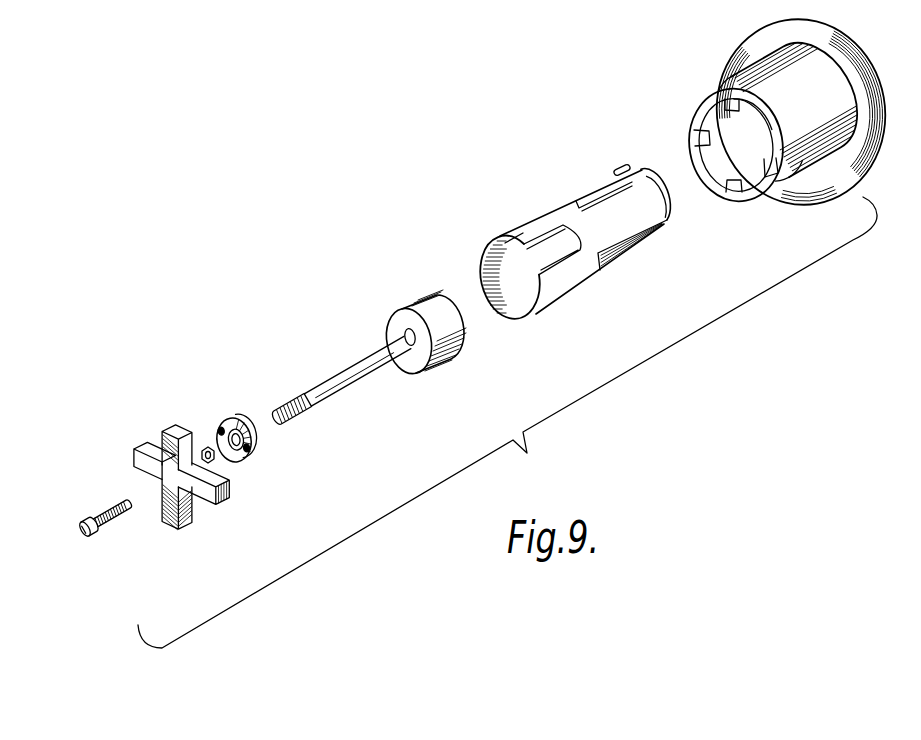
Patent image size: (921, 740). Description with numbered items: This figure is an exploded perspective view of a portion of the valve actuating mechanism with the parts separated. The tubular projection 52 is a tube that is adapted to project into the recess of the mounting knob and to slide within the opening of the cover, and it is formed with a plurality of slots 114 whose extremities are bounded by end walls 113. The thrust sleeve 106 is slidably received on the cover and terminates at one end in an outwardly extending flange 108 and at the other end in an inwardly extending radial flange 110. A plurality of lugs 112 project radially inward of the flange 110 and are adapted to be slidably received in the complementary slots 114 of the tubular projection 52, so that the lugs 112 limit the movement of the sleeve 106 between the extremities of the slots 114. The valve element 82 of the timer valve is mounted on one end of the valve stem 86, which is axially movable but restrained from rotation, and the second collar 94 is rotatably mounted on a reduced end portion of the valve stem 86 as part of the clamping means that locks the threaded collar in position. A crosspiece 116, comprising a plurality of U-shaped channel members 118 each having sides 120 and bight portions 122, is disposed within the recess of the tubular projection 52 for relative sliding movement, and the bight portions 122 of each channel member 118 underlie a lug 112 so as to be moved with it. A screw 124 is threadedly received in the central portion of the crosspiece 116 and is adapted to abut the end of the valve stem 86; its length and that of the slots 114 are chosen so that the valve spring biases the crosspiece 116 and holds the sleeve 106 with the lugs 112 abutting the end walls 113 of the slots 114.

The tubular projection 52 is at (597, 235).
The valve element 82 is at (395, 326).
The valve stem 86 is at (340, 373).
The second collar 94 is at (248, 422).
The thrust sleeve 106 is at (726, 81).
The outwardly extending flange 108 is at (859, 69).
The inwardly extending radial flange 110 is at (719, 155).
The lugs 112 is at (698, 147).
The end walls 113 is at (583, 198).
The slots 114 is at (629, 164).
The crosspiece 116 is at (160, 475).
The U-shaped channel members 118 is at (194, 415).
The sides 120 is at (194, 514).
The bight portions 122 is at (216, 492).
The screw 124 is at (103, 519).